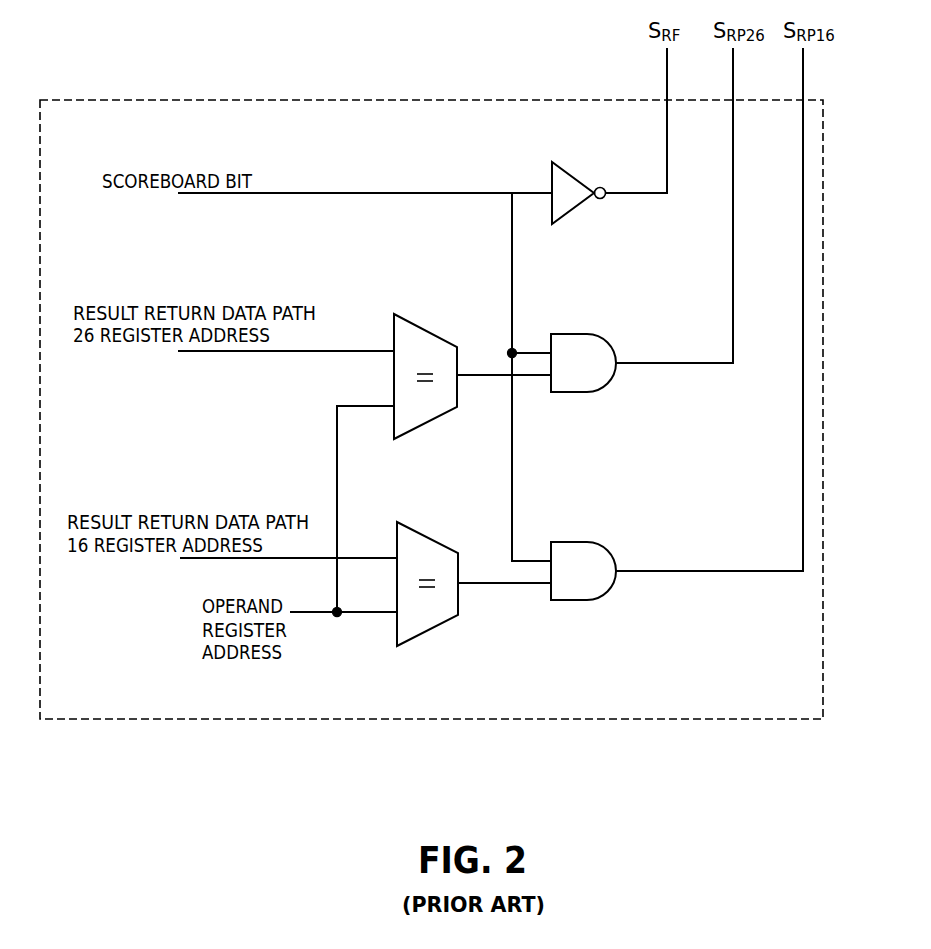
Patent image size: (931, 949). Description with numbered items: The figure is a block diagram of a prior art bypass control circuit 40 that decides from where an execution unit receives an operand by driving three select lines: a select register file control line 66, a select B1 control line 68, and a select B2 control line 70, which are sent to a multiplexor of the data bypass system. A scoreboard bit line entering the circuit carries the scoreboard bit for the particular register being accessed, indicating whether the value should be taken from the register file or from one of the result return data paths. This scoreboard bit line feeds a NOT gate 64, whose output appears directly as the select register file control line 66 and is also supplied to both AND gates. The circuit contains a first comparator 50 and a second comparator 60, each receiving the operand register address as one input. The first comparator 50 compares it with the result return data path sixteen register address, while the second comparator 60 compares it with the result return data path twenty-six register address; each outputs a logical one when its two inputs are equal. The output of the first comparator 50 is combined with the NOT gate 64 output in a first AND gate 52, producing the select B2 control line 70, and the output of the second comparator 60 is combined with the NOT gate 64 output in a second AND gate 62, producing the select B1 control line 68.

The bypass control circuit 40 is at (431, 394).
The first comparator 50 is at (441, 628).
The first AND gate 52 is at (603, 600).
The second comparator 60 is at (437, 420).
The second AND gate 62 is at (602, 392).
The NOT gate 64 is at (573, 212).
The select register file control line 66 is at (667, 166).
The select B1 control line 68 is at (733, 289).
The select B2 control line 70 is at (803, 485).